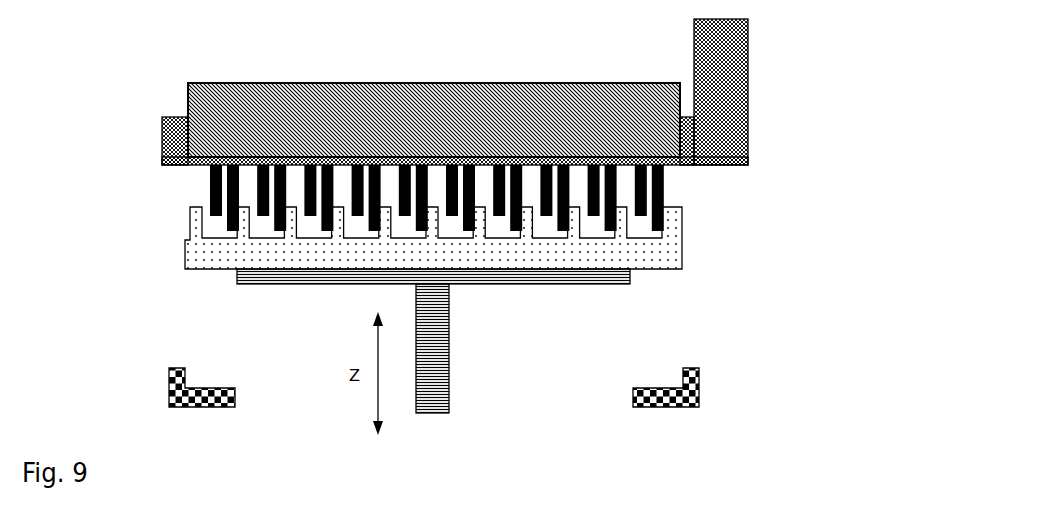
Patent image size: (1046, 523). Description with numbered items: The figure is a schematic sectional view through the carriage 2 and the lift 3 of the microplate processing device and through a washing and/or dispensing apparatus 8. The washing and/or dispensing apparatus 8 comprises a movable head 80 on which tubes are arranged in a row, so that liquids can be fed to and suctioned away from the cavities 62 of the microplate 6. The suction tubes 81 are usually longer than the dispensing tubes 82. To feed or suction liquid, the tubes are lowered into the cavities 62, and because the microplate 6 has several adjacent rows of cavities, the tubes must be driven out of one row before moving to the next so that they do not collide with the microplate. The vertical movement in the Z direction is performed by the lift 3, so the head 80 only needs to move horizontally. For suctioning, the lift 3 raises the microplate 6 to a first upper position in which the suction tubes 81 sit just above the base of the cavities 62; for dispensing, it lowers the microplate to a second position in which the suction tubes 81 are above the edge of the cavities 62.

The washing and/or dispensing apparatus 8 is at (795, 54).
The movable head 80 is at (205, 93).
The dispensing tubes 82 is at (217, 214).
The suction tubes 81 is at (230, 224).
The cavities 62 is at (263, 230).
The microplate 6 is at (808, 214).
The lift 3 is at (710, 322).
The carriage 2 is at (737, 392).